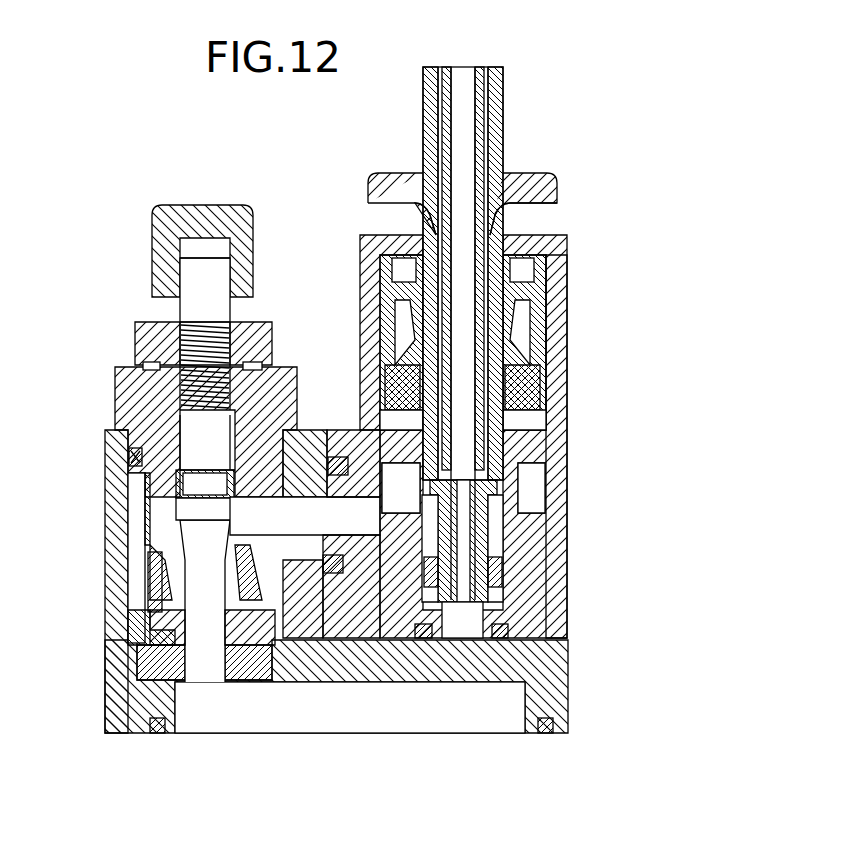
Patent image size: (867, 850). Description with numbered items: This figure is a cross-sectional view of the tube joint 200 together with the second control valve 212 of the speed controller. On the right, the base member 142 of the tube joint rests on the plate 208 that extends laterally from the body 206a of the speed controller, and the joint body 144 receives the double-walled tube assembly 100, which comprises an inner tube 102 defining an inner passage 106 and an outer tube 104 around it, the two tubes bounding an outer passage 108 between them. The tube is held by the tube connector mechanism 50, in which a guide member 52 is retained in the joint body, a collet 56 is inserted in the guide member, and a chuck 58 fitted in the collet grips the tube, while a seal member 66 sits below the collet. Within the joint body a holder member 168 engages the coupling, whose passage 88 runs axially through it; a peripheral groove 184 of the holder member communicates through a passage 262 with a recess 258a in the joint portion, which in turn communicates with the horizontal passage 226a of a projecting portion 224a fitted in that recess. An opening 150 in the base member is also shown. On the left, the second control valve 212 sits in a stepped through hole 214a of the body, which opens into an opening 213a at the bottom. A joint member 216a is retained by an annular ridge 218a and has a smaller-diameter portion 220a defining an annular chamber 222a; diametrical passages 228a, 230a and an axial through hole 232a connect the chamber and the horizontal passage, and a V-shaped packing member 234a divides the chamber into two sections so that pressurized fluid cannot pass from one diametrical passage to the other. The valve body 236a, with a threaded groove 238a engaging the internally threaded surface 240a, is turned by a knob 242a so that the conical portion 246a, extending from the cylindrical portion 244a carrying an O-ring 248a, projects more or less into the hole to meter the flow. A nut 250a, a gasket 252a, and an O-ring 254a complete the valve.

The tube joint 200 is at (340, 170).
The second control valve 212 is at (229, 215).
The knob 242a is at (243, 225).
The threaded groove 238a is at (205, 330).
The nut 250a is at (270, 333).
The internally threaded surface 240a is at (185, 420).
The joint member 216a is at (290, 390).
The valve body 236a is at (178, 432).
The O-ring 254a is at (135, 455).
The body 206a is at (112, 468).
The diametrical passage 228a is at (130, 457).
The cylindrical portion 244a is at (150, 502).
The smaller-diameter portion 220a is at (203, 532).
The conical portion 246a is at (160, 570).
The annular chamber 222a is at (160, 600).
The packing member 234a is at (150, 630).
The diametrical passage 230a is at (155, 642).
The annular ridge 218a is at (200, 662).
The gasket 252a is at (156, 733).
The axial through hole 232a is at (210, 662).
The stepped through hole 214a is at (258, 690).
The opening 213a is at (305, 715).
The recess 258a is at (365, 640).
The passage 262 is at (395, 640).
The horizontal passage 226a is at (302, 455).
The projecting portion 224a is at (338, 458).
The O-ring 248a is at (295, 497).
The opening 150 is at (470, 640).
The plate 208 is at (560, 722).
The outer passage 108 is at (433, 72).
The inner passage 106 is at (470, 76).
The inner tube 102 is at (482, 70).
The outer tube 104 is at (500, 96).
The double-walled tube assembly 100 is at (505, 309).
The tube connector mechanism 50 is at (550, 172).
The guide member 52 is at (530, 235).
The collet 56 is at (540, 297).
The chuck 58 is at (540, 332).
The joint body 144 is at (570, 375).
The seal member 66 is at (540, 402).
The holder member 168 is at (540, 428).
The peripheral groove 184 is at (535, 485).
The passage 88 is at (472, 537).
The base member 142 is at (570, 552).